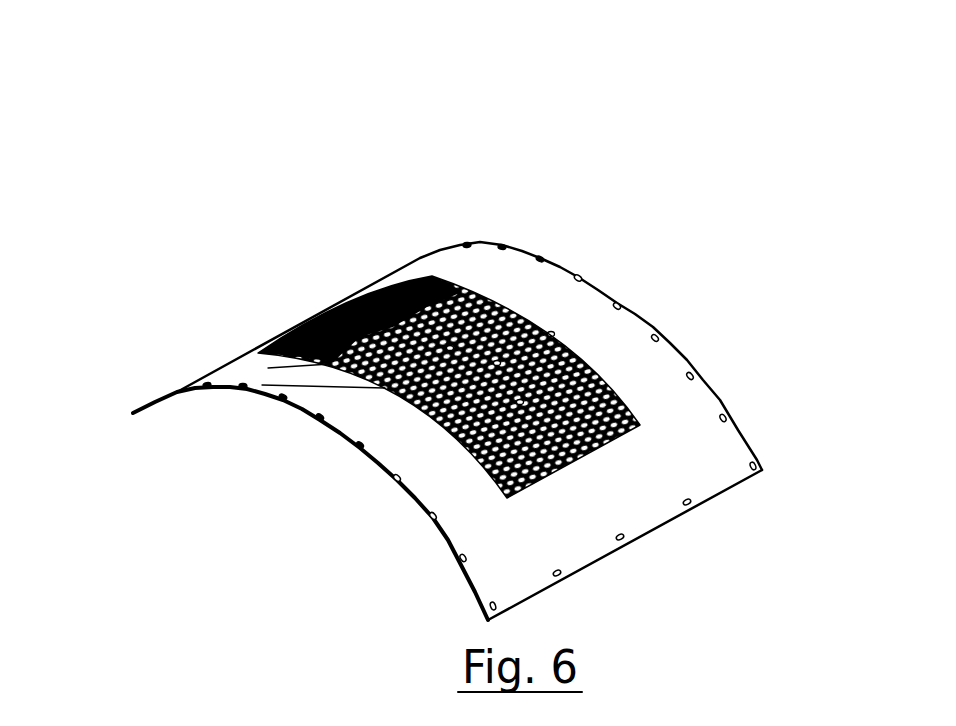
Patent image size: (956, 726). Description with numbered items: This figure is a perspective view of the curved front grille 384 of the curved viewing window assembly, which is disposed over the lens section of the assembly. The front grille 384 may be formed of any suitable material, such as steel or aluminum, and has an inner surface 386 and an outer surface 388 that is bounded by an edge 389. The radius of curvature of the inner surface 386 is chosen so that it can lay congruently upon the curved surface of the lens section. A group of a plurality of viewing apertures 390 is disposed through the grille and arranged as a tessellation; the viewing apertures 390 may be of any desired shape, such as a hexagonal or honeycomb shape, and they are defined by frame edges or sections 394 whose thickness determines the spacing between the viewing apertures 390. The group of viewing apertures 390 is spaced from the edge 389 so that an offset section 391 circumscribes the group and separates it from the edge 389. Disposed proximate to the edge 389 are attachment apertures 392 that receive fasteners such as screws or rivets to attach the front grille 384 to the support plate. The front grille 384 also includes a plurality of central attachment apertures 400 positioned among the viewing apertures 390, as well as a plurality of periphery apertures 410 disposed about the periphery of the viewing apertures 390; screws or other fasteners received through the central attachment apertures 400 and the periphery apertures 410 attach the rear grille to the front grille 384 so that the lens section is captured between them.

The front grille 384 is at (722, 398).
The inner surface 386 is at (212, 391).
The outer surface 388 is at (615, 337).
The edge 389 is at (372, 462).
The viewing apertures 390 is at (508, 304).
The offset section 391 is at (510, 558).
The attachment apertures 392 is at (540, 258).
The frame edges or sections 394 is at (571, 349).
The central attachment apertures 400 is at (460, 287).
The periphery apertures 410 is at (262, 385).